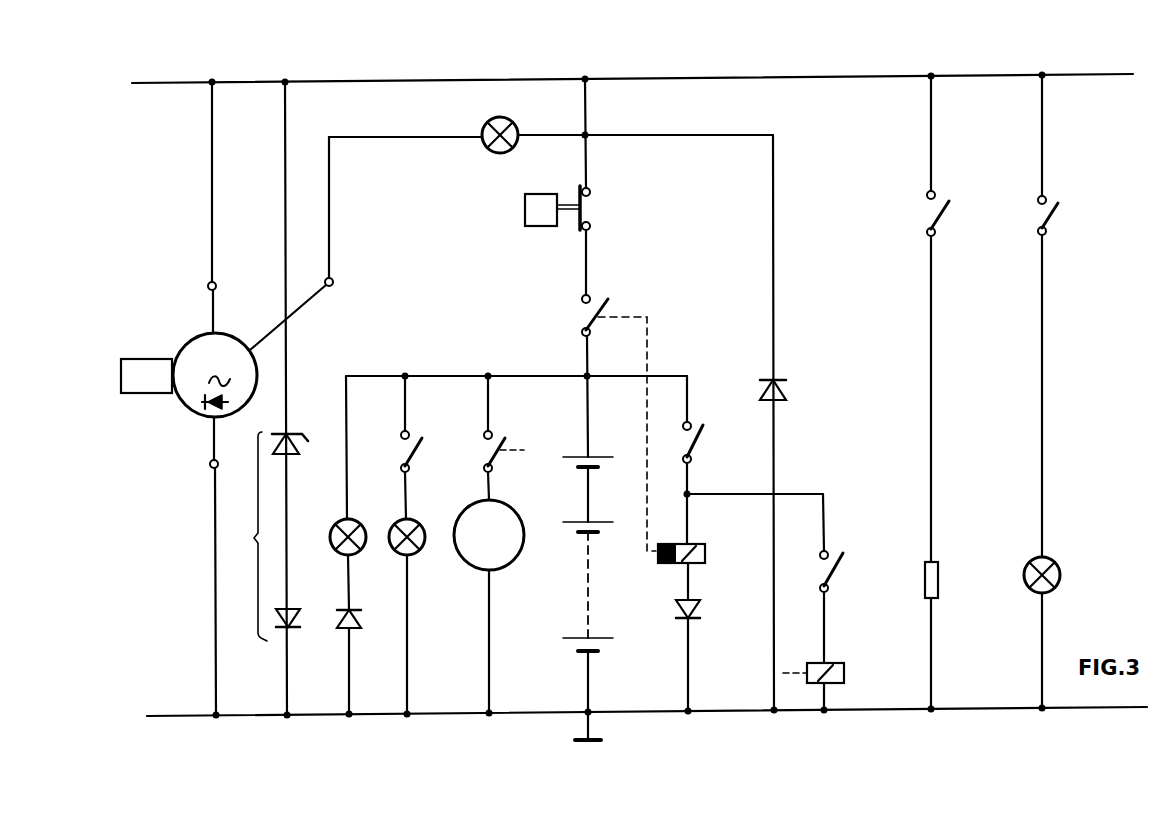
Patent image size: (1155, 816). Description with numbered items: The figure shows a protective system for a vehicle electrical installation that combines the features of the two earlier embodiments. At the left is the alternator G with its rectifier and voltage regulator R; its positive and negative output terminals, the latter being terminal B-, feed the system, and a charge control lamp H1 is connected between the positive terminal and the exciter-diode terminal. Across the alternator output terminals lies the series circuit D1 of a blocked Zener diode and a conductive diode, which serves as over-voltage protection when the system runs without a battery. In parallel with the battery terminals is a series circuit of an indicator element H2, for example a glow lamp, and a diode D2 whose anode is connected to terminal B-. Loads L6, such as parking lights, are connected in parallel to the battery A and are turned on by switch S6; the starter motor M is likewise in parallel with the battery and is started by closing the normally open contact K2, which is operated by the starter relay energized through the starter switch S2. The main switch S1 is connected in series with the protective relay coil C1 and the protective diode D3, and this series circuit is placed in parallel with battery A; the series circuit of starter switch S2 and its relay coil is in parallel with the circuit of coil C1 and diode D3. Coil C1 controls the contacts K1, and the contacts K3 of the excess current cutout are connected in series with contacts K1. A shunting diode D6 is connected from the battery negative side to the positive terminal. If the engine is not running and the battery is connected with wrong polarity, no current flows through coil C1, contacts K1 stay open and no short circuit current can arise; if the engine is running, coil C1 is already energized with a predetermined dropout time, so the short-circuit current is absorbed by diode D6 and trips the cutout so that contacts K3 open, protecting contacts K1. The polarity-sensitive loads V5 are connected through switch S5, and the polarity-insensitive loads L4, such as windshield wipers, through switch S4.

The alternator G is at (249, 398).
The voltage regulator R is at (146, 376).
The negative terminal B- is at (199, 481).
The charge control lamp H1 is at (491, 152).
The series circuit D1 is at (269, 398).
The indicator element H2 is at (333, 531).
The diode D2 is at (364, 662).
The switch S6 is at (422, 447).
The loads L6 is at (417, 546).
The normally open contact K2 is at (505, 438).
The starter motor M is at (496, 548).
The battery A is at (585, 592).
The contacts of excess current cutout K3 is at (573, 187).
The contacts K1 is at (602, 423).
The main switch S1 is at (753, 460).
The protective relay C1 is at (694, 571).
The protective diode D3 is at (705, 654).
The shunting diode D6 is at (787, 422).
The starter switch S2 is at (826, 602).
The switch S5 is at (923, 319).
The loads V5 is at (944, 635).
The switch S4 is at (1061, 316).
The loads L4 is at (1055, 632).